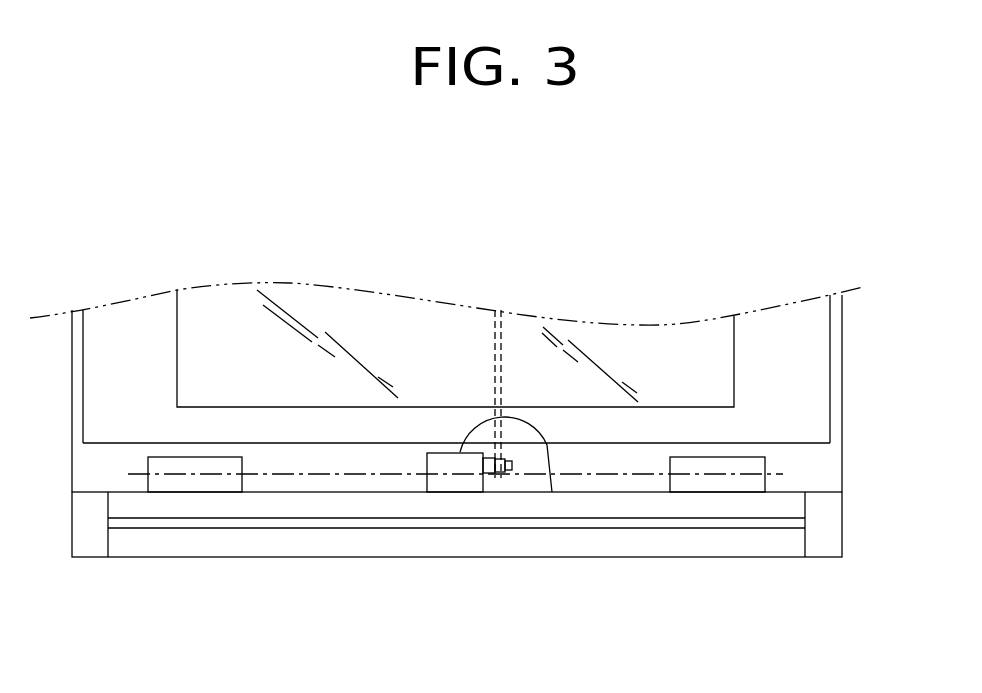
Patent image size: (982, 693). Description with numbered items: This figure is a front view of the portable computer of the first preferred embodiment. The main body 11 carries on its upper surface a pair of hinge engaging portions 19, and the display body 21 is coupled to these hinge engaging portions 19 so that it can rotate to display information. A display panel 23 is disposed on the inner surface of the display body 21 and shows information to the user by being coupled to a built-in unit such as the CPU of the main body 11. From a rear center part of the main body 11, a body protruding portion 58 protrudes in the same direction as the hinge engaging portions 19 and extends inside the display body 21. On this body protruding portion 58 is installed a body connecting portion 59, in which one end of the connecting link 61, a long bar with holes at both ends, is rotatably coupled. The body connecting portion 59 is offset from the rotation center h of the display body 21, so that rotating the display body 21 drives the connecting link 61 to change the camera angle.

The main body 11 is at (275, 562).
The hinge engaging portion 19 is at (723, 482).
The display body 21 is at (133, 296).
The display panel 23 is at (316, 305).
The body protruding portion 58 is at (463, 483).
The body connecting portion 59 is at (483, 452).
The connecting link 61 is at (502, 360).
The rotation center h is at (618, 475).